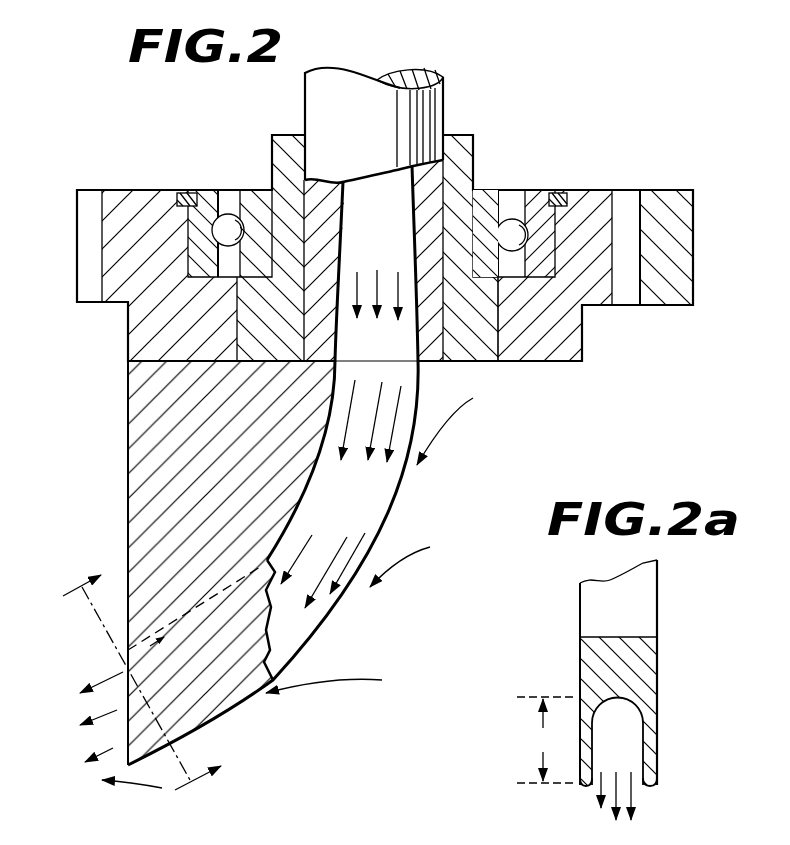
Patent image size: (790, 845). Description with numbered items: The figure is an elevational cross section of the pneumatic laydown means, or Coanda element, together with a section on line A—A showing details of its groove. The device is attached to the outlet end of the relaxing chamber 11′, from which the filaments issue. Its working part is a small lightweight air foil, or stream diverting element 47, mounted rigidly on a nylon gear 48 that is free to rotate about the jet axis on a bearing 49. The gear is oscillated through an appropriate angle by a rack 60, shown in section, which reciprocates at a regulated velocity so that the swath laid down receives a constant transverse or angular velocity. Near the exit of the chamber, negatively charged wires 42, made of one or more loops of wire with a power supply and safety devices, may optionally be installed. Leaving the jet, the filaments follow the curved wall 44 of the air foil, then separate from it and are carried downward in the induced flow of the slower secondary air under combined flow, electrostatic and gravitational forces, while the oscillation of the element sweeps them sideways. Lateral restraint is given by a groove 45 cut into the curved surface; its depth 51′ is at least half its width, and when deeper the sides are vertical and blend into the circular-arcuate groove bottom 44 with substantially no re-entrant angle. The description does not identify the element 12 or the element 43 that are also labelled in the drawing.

In FIG. 2, the blade 12 is at (122, 338).
In FIG. 2, the negatively charged wires 42 is at (284, 134).
In FIG. 2, the nylon gear 48 is at (78, 236).
In FIG. 2, the rack 60 is at (670, 204).
In FIG. 2, the bearing 49 is at (210, 204).
In FIG. 2, the relaxing chamber 11′ is at (377, 139).
In FIG. 2, the wall 44 is at (342, 509).
In FIG. 2a, the wall 44 is at (618, 742).
In FIG. 2, the stream diverting element 47 is at (130, 429).
In FIG. 2a, the stream diverting element 47 is at (625, 614).
In FIG. 2a, the groove 45 is at (628, 762).
In FIG. 2a, the depth of the groove 51′ is at (546, 740).
In FIG. 2a, the outlet edge 43 is at (637, 787).